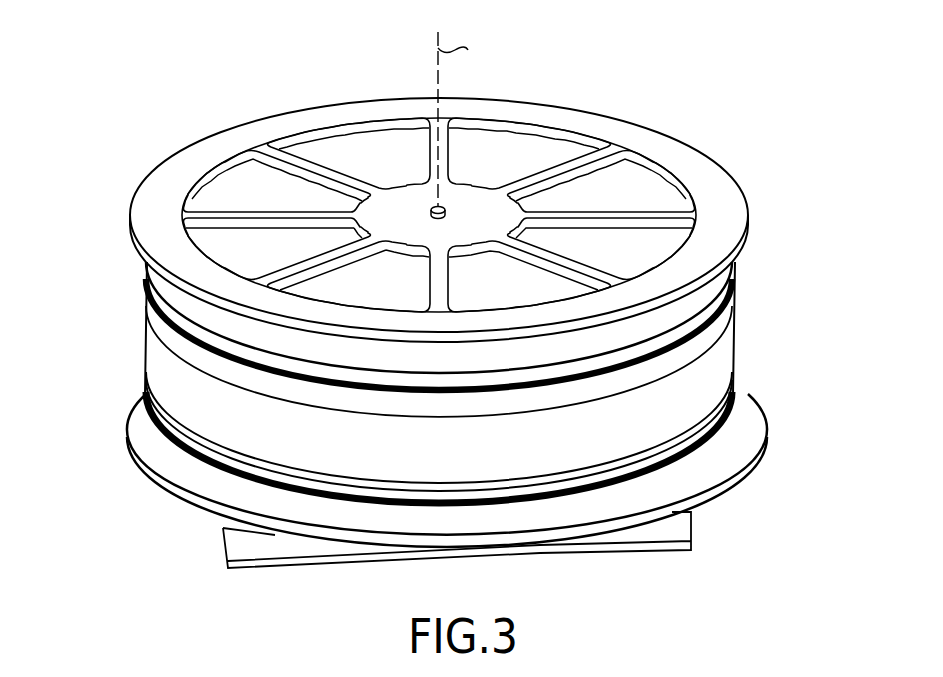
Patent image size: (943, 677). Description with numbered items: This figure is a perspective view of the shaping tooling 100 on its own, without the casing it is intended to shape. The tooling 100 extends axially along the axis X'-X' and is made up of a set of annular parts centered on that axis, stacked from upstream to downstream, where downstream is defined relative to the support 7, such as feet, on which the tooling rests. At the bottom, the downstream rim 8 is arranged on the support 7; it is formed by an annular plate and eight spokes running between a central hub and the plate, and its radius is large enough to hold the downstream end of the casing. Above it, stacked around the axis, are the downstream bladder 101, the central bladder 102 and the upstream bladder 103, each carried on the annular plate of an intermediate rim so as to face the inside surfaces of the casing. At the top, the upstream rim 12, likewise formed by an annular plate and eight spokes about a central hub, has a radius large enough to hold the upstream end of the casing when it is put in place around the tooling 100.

The shaping tooling 100 is at (712, 96).
The upstream rim 12 is at (720, 178).
The central bladder 102 is at (733, 345).
The upstream bladder 103 is at (203, 315).
The downstream bladder 101 is at (190, 470).
The downstream rim 8 is at (132, 433).
The support 7 is at (258, 552).